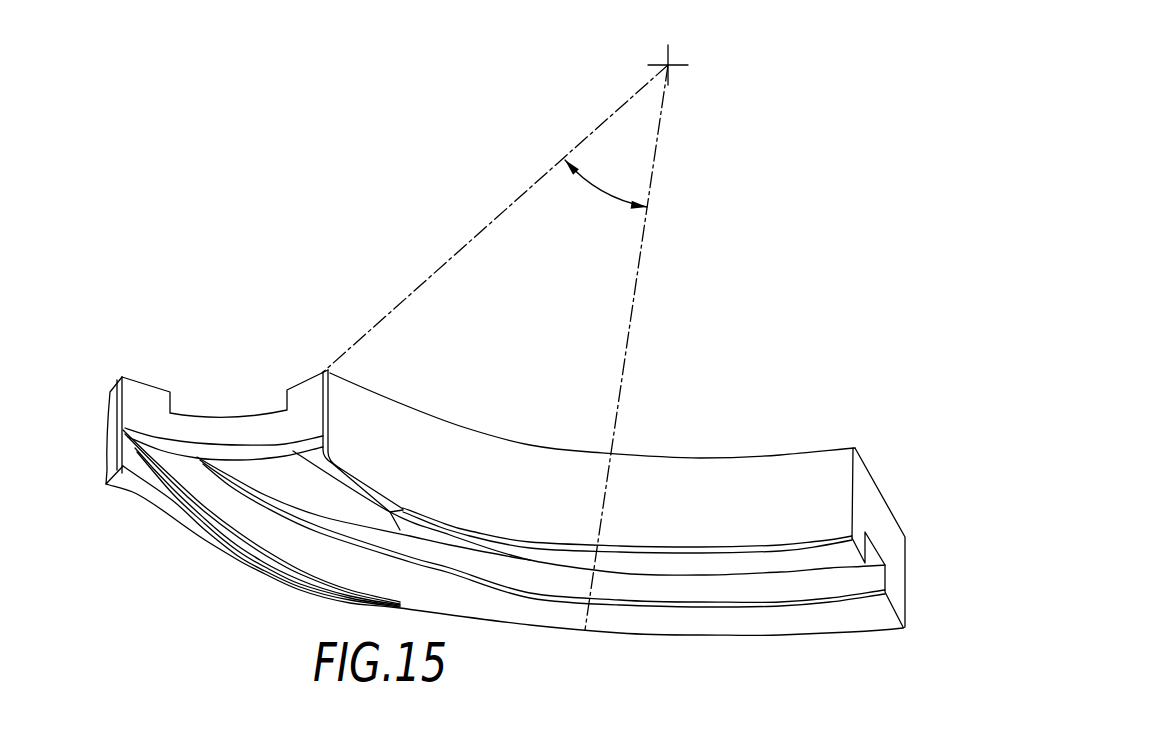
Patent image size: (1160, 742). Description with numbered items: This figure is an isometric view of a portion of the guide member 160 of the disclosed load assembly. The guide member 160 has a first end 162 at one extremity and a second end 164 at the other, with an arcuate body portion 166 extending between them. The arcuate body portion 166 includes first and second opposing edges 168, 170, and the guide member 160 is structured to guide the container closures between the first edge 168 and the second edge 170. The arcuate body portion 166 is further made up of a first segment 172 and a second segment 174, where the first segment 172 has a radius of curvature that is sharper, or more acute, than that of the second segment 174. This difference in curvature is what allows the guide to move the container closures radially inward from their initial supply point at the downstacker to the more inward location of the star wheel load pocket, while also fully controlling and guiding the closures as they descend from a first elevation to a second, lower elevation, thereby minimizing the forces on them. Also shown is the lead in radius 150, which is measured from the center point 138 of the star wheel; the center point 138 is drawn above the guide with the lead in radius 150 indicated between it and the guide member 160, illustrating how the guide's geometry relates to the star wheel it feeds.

The center point 138 is at (708, 37).
The lead in radius 150 is at (613, 198).
The guide member 160 is at (804, 682).
The first end 162 is at (192, 385).
The second end 164 is at (920, 597).
The arcuate body portion 166 is at (538, 475).
The first edge 168 is at (122, 508).
The second edge 170 is at (364, 450).
The first segment 172 is at (272, 540).
The second segment 174 is at (692, 552).